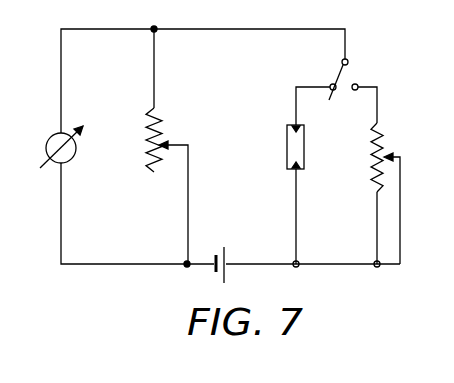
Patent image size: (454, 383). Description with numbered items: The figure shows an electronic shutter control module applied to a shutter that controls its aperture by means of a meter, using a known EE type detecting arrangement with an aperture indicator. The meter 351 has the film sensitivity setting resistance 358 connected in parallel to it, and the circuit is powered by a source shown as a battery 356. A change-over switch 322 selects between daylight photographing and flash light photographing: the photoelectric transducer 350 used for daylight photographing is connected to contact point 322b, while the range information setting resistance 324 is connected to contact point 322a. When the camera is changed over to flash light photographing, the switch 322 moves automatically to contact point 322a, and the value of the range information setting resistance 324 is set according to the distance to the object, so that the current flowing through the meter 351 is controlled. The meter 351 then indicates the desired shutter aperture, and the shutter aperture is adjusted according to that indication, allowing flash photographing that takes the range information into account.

The meter 351 is at (80, 148).
The film sensitivity setting resistance 358 is at (165, 118).
The battery 356 is at (232, 242).
The change-over switch 322 is at (348, 74).
The contact point 322b is at (327, 81).
The contact point 322a is at (364, 84).
The photoelectric transducer 350 is at (315, 129).
The range information setting resistance 324 is at (394, 122).